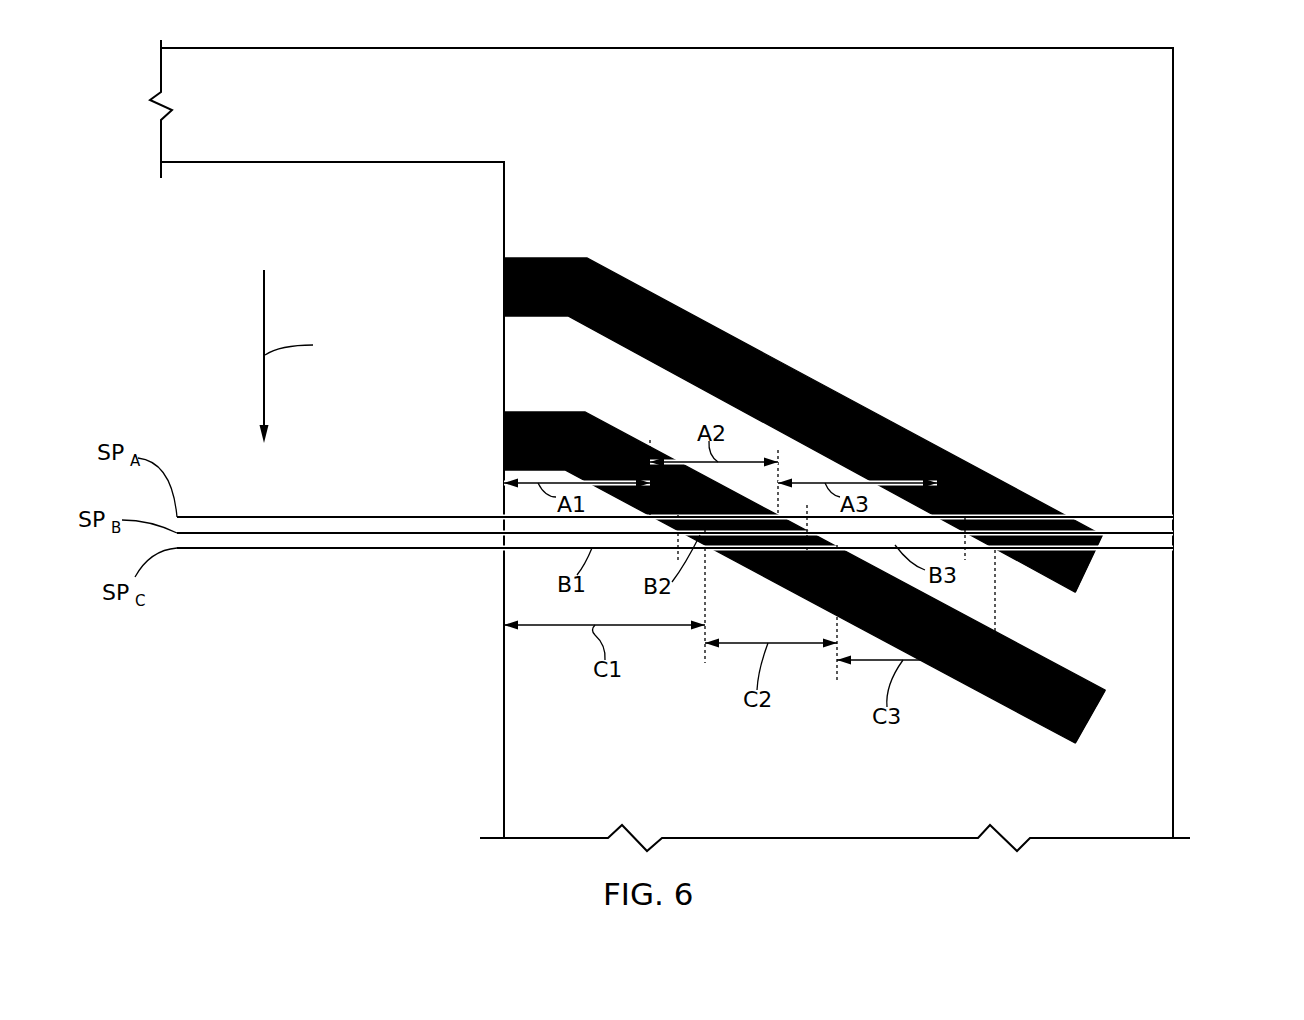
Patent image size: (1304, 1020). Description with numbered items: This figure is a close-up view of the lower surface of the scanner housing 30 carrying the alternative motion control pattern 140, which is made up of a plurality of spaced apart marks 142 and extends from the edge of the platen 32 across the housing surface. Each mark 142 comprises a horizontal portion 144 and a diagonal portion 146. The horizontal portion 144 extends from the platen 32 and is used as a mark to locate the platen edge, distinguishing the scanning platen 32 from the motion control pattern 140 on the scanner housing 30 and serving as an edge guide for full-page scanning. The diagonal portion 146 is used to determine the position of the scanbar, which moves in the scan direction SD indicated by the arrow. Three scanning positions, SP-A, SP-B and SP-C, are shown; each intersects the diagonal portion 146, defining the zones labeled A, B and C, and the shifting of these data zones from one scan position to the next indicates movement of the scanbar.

The scanner housing 30 is at (1130, 275).
The platen 32 is at (262, 662).
The motion control pattern 140 is at (903, 498).
The marks 142 is at (1046, 484).
The horizontal portion 144 is at (537, 275).
The diagonal portion 146 is at (1040, 505).